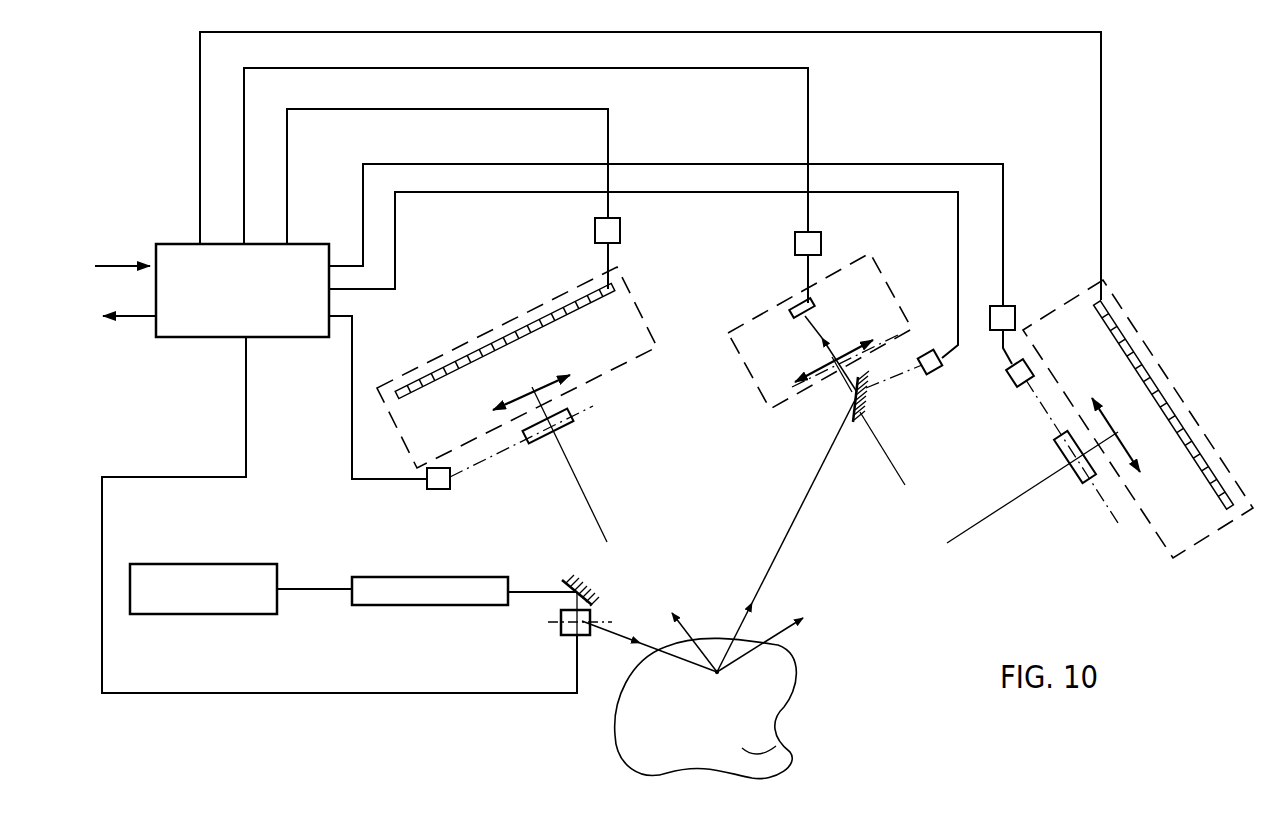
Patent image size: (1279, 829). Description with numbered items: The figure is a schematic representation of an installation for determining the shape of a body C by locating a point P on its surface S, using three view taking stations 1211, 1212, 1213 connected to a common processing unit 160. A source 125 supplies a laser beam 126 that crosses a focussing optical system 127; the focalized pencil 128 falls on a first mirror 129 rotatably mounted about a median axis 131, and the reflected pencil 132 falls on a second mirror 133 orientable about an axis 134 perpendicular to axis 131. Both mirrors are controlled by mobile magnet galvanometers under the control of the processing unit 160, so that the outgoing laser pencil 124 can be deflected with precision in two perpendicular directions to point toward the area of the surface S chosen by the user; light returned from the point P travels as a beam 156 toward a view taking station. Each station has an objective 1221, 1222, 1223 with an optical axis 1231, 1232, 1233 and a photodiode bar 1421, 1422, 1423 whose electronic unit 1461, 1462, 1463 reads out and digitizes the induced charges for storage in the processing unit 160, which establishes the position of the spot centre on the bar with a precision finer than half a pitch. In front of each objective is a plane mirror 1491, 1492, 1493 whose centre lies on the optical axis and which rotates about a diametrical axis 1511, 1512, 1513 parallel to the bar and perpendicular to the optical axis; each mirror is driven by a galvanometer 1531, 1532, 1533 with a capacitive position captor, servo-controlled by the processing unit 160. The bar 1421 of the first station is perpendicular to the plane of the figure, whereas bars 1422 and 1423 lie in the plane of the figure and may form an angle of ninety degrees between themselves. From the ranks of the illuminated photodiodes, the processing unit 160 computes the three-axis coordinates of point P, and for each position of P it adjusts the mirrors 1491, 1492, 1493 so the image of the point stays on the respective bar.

The processing unit 160 is at (190, 337).
The source 125 is at (228, 550).
The laser beam 126 is at (332, 589).
The focussing optical system 127 is at (395, 580).
The focalized pencil 128 is at (518, 591).
The first mirror 129 is at (596, 595).
The median axis 131 is at (590, 580).
The reflected pencil 132 is at (560, 600).
The second mirror 133 is at (568, 636).
The axis 134 is at (607, 620).
The laser pencil 124 is at (613, 639).
The reflected light beam 156 is at (748, 617).
The point P is at (737, 653).
The body C is at (615, 733).
The surface S is at (787, 742).
The second view taking station 1212 is at (641, 302).
The second electronic unit 1462 is at (595, 230).
The second bar 1422 is at (511, 336).
The second objective 1222 is at (546, 393).
The second plane mirror 1492 is at (572, 421).
The second mirror axis 1512 is at (488, 462).
The second optical axis 1232 is at (596, 518).
The second galvanometer 1532 is at (438, 489).
The first view taking station 1211 is at (893, 295).
The first electronic unit 1461 is at (795, 232).
The first bar 1421 is at (796, 308).
The first objective 1221 is at (822, 366).
The first plane mirror 1491 is at (853, 425).
The first mirror axis 1511 is at (868, 400).
The first optical axis 1231 is at (900, 478).
The first galvanometer 1531 is at (930, 372).
The third view taking station 1213 is at (1047, 313).
The third electronic unit 1463 is at (995, 306).
The third bar 1423 is at (1133, 360).
The third objective 1223 is at (1128, 448).
The third plane mirror 1493 is at (1058, 450).
The third mirror axis 1513 is at (1097, 494).
The third optical axis 1233 is at (982, 522).
The third galvanometer 1533 is at (1011, 386).